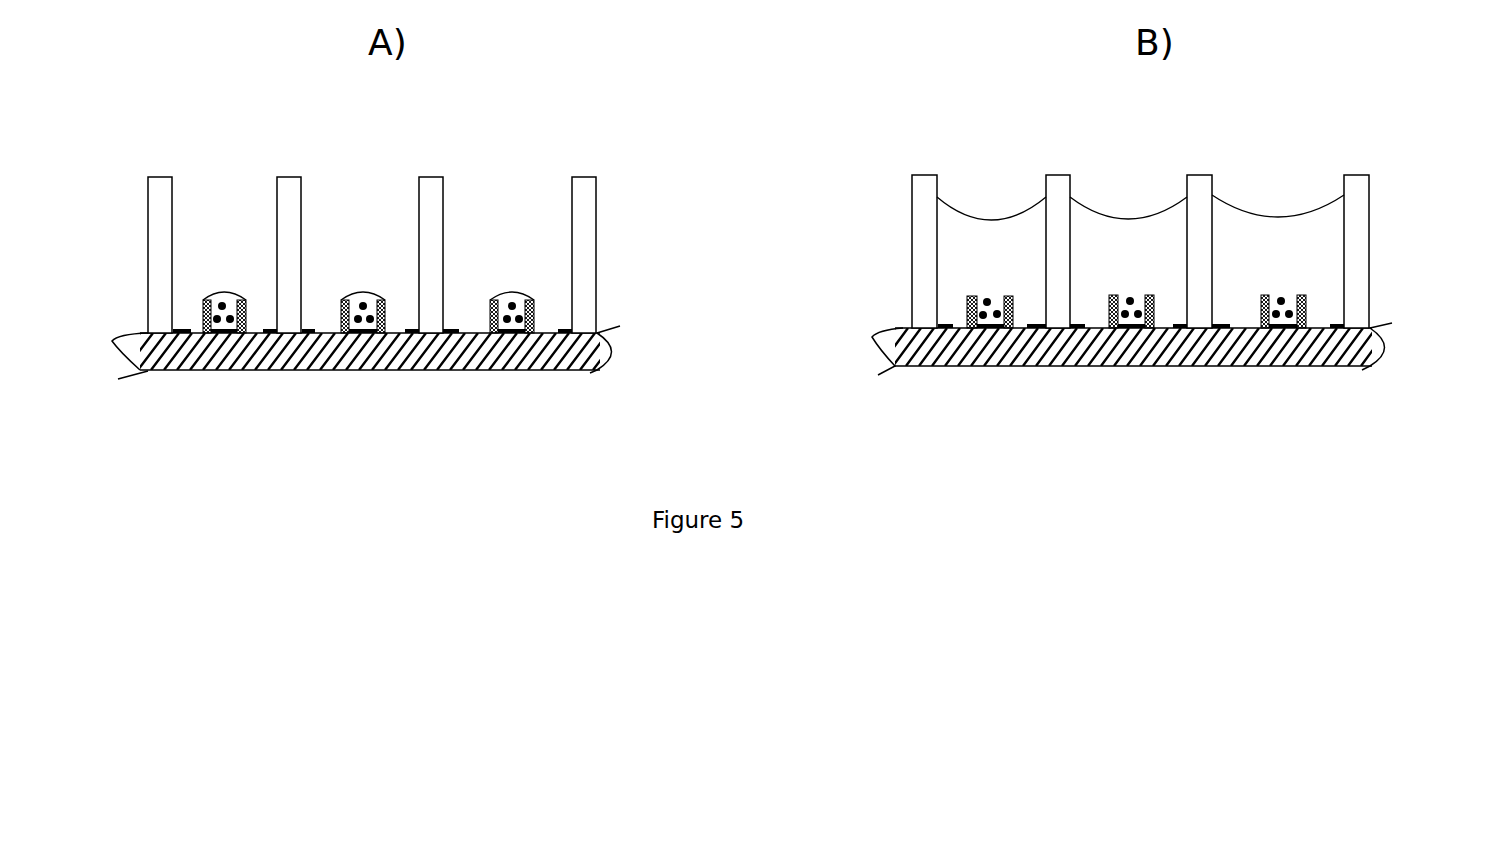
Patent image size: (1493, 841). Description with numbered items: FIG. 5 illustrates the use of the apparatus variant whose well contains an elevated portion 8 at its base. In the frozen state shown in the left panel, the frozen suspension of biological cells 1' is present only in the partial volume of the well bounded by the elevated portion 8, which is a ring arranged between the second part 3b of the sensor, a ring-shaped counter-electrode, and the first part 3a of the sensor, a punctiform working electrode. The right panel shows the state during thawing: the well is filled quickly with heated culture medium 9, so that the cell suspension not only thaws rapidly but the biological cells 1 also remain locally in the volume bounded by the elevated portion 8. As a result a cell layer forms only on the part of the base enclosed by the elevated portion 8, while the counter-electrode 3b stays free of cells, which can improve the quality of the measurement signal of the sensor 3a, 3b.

The biological cells 1 is at (1136, 274).
The frozen suspension of biological cells 1' is at (368, 254).
The first part of a sensor 3a is at (528, 320).
The second part of a sensor 3b is at (562, 325).
The elevated portion 8 is at (203, 312).
The culture medium 9 is at (958, 243).